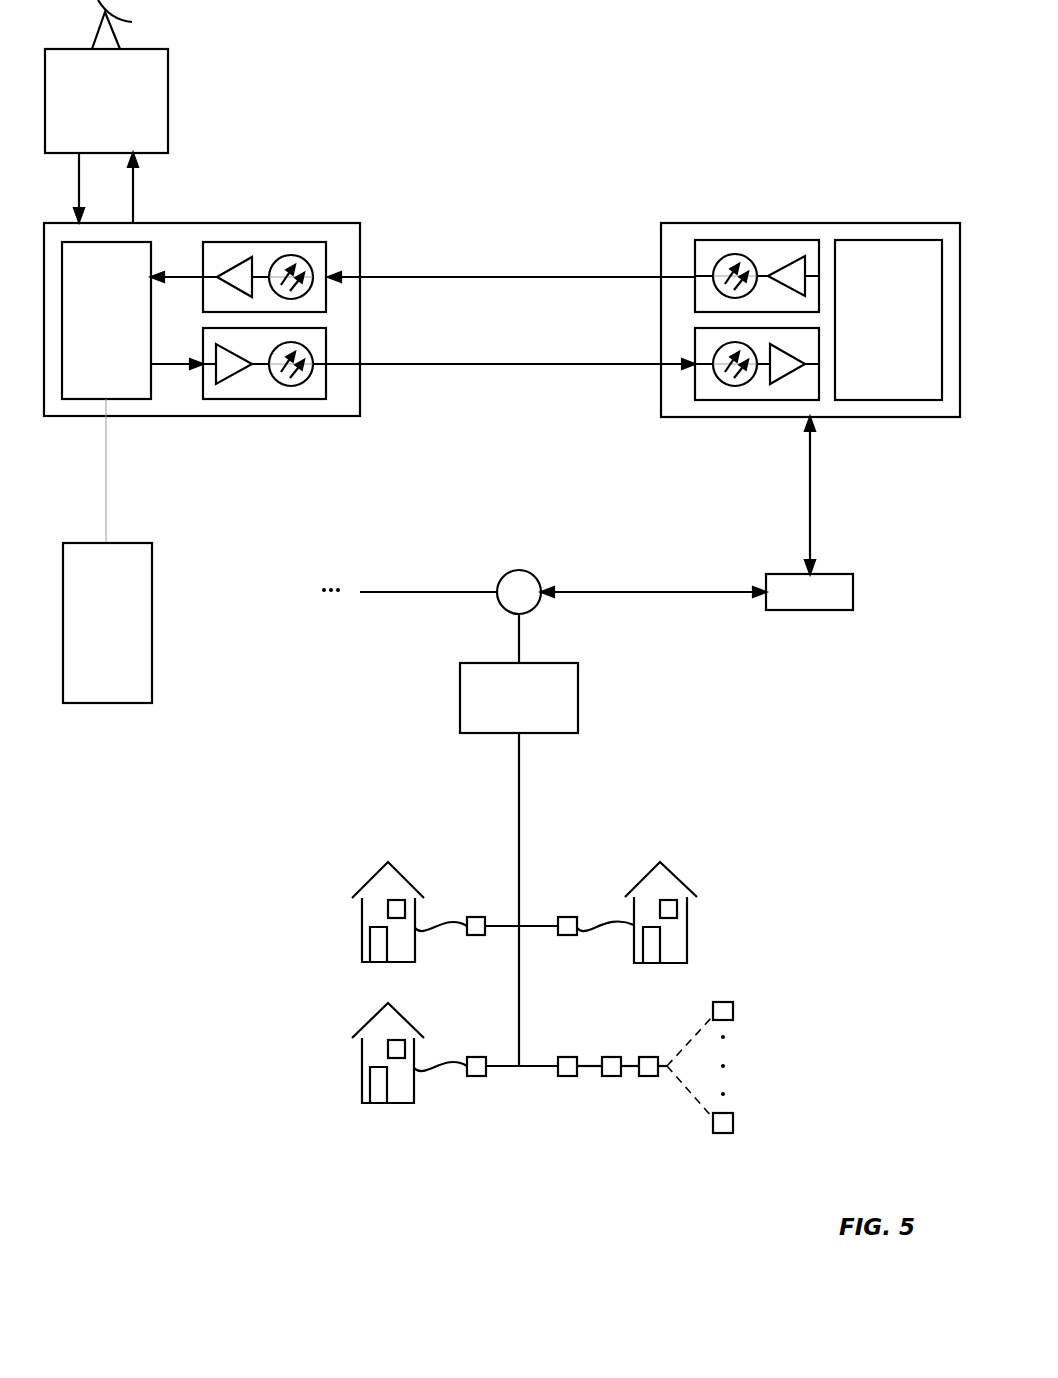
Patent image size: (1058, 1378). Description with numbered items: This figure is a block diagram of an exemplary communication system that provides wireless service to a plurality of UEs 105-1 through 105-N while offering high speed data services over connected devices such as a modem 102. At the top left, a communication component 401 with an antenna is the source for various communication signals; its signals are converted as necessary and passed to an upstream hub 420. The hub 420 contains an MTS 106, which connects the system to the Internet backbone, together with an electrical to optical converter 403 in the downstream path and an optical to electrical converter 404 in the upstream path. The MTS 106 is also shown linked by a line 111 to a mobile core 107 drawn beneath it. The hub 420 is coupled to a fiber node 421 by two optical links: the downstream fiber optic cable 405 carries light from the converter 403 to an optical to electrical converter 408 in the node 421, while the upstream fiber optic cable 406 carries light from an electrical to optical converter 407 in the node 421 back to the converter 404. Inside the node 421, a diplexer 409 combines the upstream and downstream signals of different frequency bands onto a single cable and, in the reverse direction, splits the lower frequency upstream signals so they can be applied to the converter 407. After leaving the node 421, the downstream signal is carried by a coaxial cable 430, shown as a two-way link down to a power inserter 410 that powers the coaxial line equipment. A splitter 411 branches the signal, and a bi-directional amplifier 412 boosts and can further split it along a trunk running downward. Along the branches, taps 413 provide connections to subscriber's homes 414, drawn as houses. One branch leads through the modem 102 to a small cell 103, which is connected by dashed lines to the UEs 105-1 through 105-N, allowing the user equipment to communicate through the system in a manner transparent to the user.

The communication component 401 is at (86, 112).
The MTS 106 is at (88, 330).
The mobile core 107 is at (88, 661).
The link to mobile core 111 is at (106, 476).
The electrical to optical converter 403 is at (262, 400).
The optical to electrical converter 404 is at (247, 242).
The fiber optic cable 405 is at (455, 364).
The fiber optic cable 406 is at (500, 277).
The electrical to optical converter 407 is at (758, 240).
The optical to electrical converter 408 is at (757, 400).
The diplexer 409 is at (870, 344).
The power inserter 410 is at (791, 604).
The splitter 411 is at (519, 570).
The bi-directional amplifier 412 is at (519, 840).
The taps 413 is at (476, 917).
The subscriber's homes 414 is at (380, 863).
The hub 420 is at (352, 417).
The fiber node 421 is at (937, 417).
The coaxial cable 430 is at (810, 520).
The modem 102 is at (611, 1057).
The small cell 103 is at (652, 1076).
The UE 105-1 is at (723, 1002).
The UE 105-N is at (733, 1123).